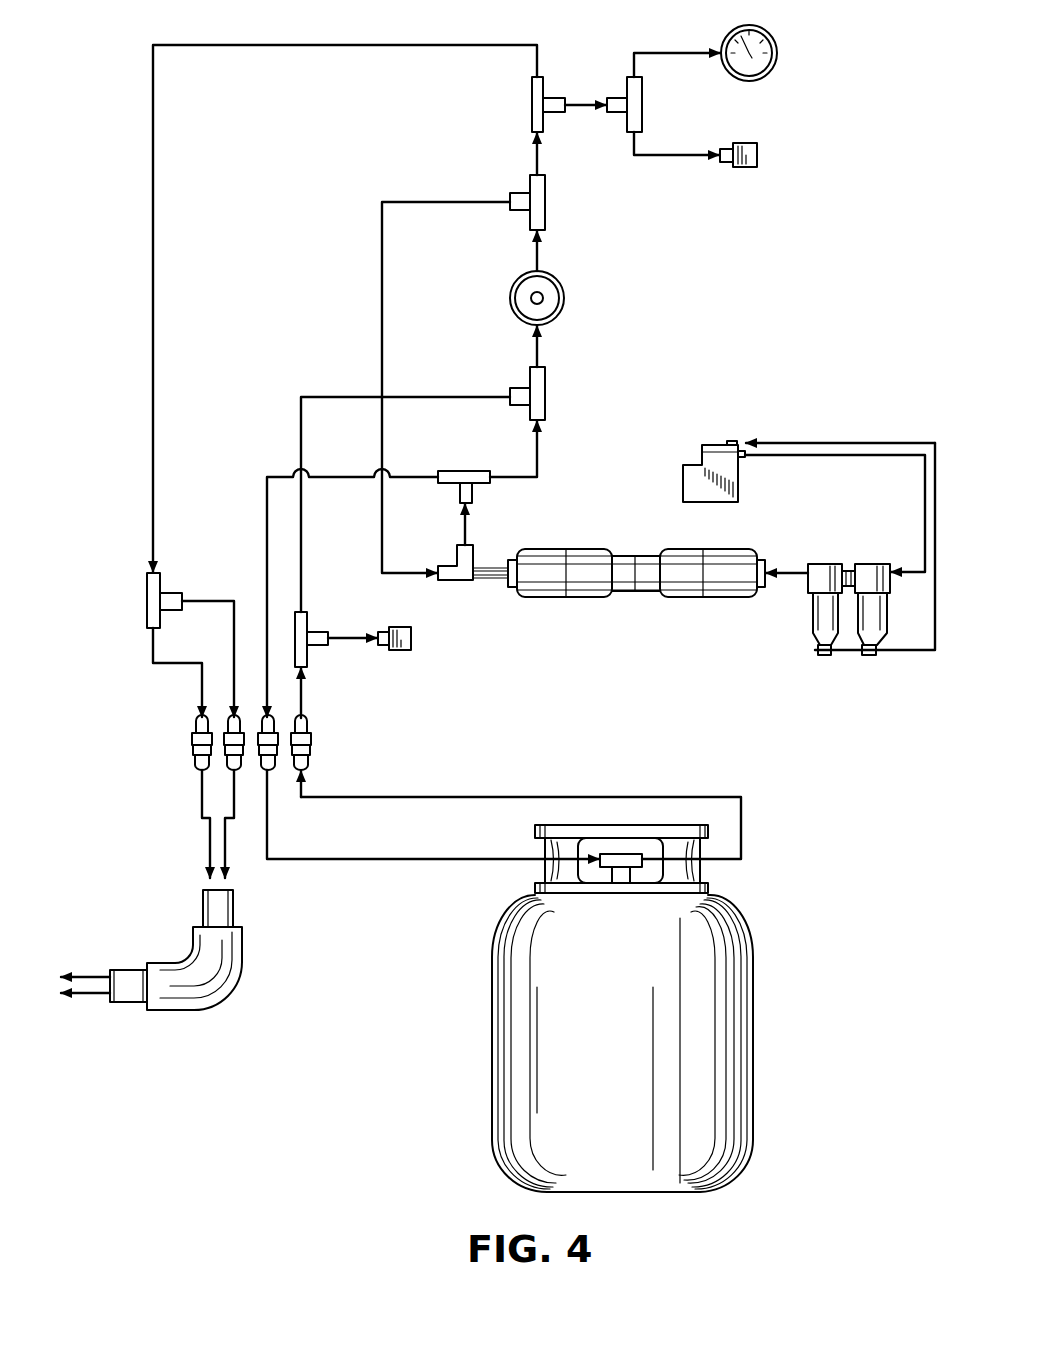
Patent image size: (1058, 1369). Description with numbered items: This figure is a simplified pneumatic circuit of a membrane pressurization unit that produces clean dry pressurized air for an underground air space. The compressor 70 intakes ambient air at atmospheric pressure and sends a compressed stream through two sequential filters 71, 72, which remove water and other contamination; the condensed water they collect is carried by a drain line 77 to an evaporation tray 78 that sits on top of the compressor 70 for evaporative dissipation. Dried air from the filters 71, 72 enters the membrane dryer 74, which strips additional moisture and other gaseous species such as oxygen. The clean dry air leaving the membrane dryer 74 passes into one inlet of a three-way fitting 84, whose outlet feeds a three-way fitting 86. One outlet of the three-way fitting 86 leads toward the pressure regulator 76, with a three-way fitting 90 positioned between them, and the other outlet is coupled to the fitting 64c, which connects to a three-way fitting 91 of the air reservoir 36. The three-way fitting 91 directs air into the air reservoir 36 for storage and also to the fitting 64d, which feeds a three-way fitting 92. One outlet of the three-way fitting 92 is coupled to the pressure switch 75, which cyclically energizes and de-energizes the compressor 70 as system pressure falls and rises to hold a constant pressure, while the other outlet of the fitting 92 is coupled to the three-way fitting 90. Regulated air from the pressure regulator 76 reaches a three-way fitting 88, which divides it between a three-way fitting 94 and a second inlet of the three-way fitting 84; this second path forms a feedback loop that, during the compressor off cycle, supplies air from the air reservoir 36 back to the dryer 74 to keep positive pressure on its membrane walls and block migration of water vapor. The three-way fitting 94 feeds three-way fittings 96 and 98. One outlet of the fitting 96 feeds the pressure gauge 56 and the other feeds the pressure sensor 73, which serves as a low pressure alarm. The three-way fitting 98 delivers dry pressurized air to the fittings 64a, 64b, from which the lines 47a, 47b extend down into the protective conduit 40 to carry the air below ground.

The air reservoir 36 is at (610, 1036).
The protective conduit 40 is at (136, 968).
The line 47a is at (210, 858).
The line 47b is at (226, 853).
The pressure gauge 56 is at (770, 30).
The fitting 64a is at (195, 725).
The fitting 64b is at (291, 752).
The fitting 64c is at (310, 762).
The fitting 64d is at (311, 730).
The compressor 70 is at (740, 495).
The filter 71 is at (820, 564).
The filter 72 is at (872, 564).
The pressure sensor 73 is at (751, 143).
The membrane dryer 74 is at (685, 550).
The pressure switch 75 is at (405, 651).
The pressure regulator 76 is at (521, 277).
The drain line 77 is at (845, 443).
The evaporation tray 78 is at (712, 445).
The three-way fitting 84 is at (457, 586).
The three-way fitting 86 is at (462, 470).
The three-way fitting 88 is at (528, 188).
The three-way fitting 90 is at (528, 383).
The three-way fitting 91 is at (620, 854).
The three-way fitting 92 is at (307, 622).
The three-way fitting 94 is at (545, 85).
The three-way fitting 96 is at (615, 113).
The three-way fitting 98 is at (160, 586).